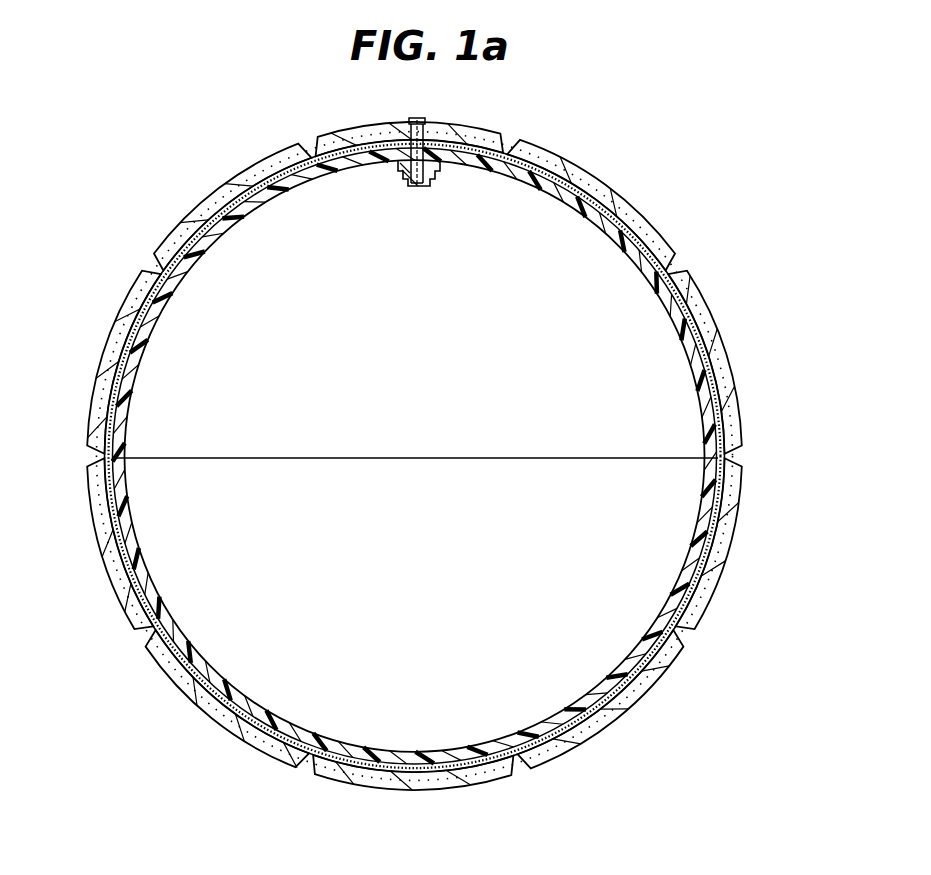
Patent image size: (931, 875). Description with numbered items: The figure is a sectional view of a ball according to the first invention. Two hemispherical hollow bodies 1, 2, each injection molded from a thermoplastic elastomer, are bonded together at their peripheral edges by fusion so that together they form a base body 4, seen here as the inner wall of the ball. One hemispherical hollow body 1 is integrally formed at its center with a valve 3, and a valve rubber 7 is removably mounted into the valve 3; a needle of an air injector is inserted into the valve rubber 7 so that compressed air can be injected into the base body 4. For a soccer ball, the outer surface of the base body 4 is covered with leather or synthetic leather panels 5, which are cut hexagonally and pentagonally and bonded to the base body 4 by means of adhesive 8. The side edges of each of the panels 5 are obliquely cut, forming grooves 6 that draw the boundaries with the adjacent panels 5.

The hemispherical hollow body 1 is at (722, 430).
The hemispherical hollow body 2 is at (729, 493).
The valve 3 is at (447, 184).
The base body 4 is at (782, 400).
The panel 5 is at (636, 693).
The groove 6 is at (310, 137).
The valve rubber 7 is at (429, 123).
The adhesive 8 is at (197, 236).